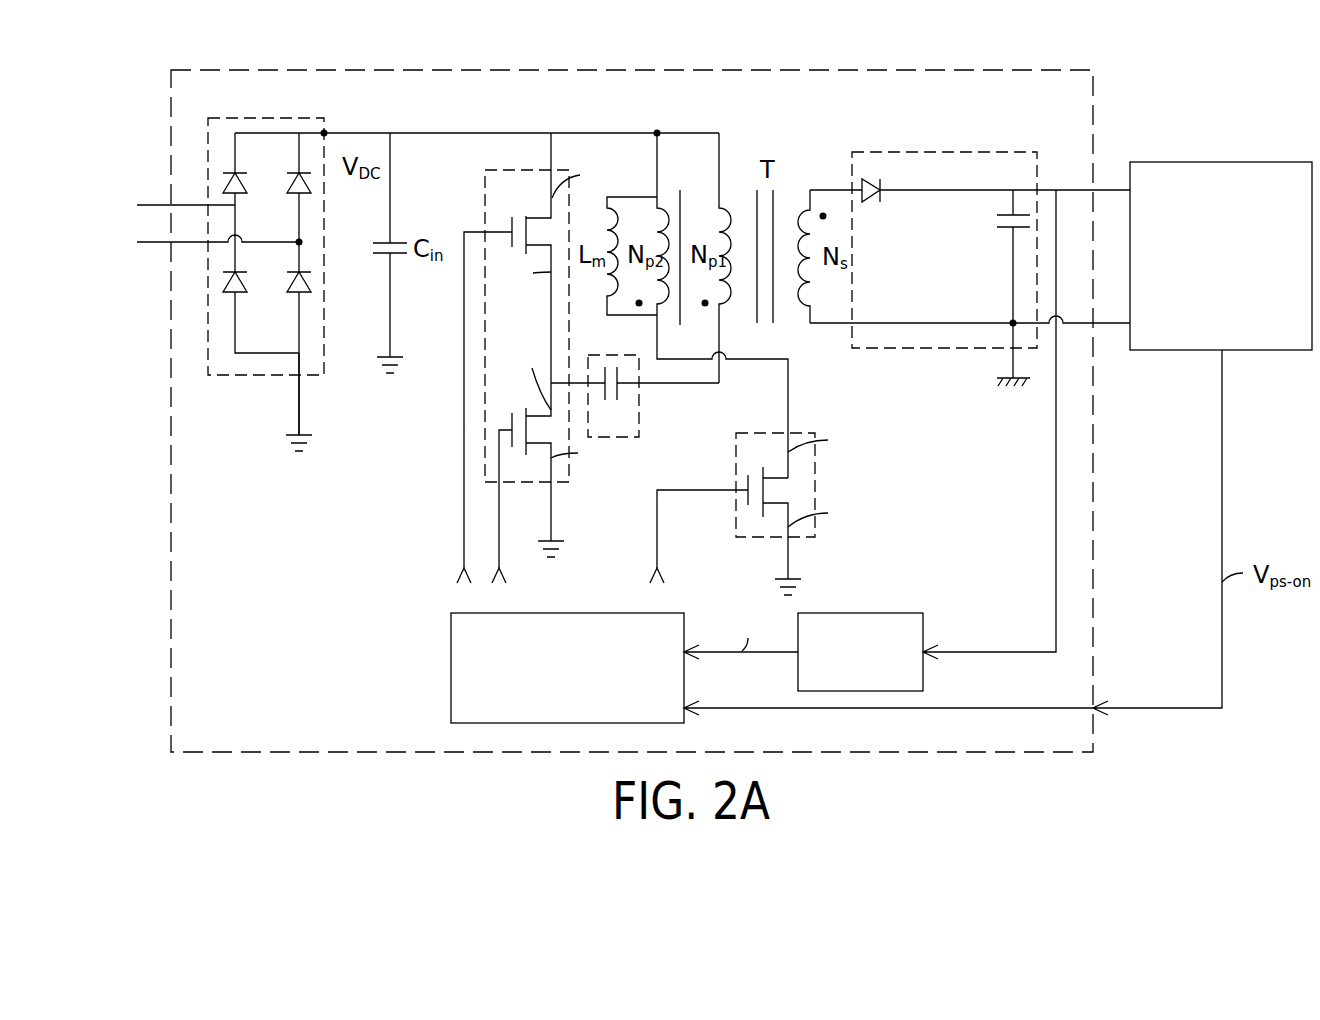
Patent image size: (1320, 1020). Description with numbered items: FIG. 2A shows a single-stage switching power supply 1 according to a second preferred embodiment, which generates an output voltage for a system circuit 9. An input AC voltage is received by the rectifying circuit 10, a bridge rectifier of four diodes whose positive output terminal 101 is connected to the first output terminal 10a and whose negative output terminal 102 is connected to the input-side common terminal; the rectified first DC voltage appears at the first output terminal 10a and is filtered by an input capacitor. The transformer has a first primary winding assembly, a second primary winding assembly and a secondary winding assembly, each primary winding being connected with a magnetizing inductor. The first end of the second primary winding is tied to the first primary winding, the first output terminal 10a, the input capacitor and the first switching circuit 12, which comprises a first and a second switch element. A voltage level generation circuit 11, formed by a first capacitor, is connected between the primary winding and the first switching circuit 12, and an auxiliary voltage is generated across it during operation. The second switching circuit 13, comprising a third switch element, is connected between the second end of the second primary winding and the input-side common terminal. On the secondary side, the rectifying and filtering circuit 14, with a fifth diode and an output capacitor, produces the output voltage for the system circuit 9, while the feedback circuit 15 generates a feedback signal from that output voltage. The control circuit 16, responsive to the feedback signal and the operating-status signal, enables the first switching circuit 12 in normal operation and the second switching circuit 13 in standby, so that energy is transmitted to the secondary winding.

The single-stage switching power supply 1 is at (1080, 70).
The system circuit 9 is at (1221, 162).
The rectifying circuit 10 is at (232, 375).
The first output terminal 10a is at (324, 133).
The positive output terminal 101 is at (305, 133).
The negative output terminal 102 is at (299, 362).
The voltage level generation circuit 11 is at (640, 413).
The first switching circuit 12 is at (485, 190).
The second switching circuit 13 is at (736, 452).
The rectifying and filtering circuit 14 is at (977, 152).
The feedback circuit 15 is at (868, 612).
The control circuit 16 is at (451, 667).